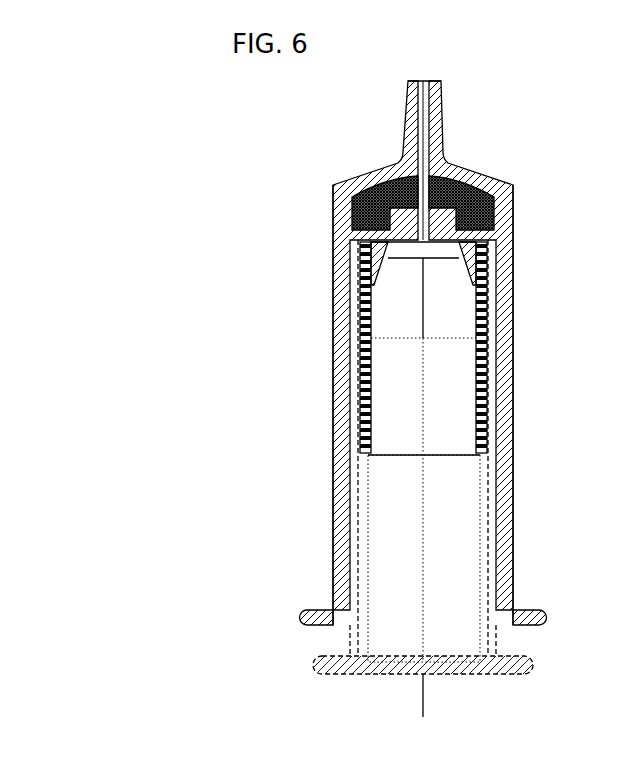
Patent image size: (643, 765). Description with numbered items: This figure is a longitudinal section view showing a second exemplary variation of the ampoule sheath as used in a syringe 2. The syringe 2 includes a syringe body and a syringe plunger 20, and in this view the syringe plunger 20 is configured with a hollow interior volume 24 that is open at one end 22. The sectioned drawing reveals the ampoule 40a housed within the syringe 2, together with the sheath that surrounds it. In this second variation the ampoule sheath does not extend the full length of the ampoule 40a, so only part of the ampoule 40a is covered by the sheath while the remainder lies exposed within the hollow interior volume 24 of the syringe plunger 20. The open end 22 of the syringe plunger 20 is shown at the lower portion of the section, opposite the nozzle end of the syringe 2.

The syringe 2 is at (198, 183).
The syringe plunger 20 is at (352, 415).
The open end of the syringe plunger 22 is at (385, 660).
The hollow interior volume 24 is at (357, 507).
The ampoule 40a is at (395, 287).